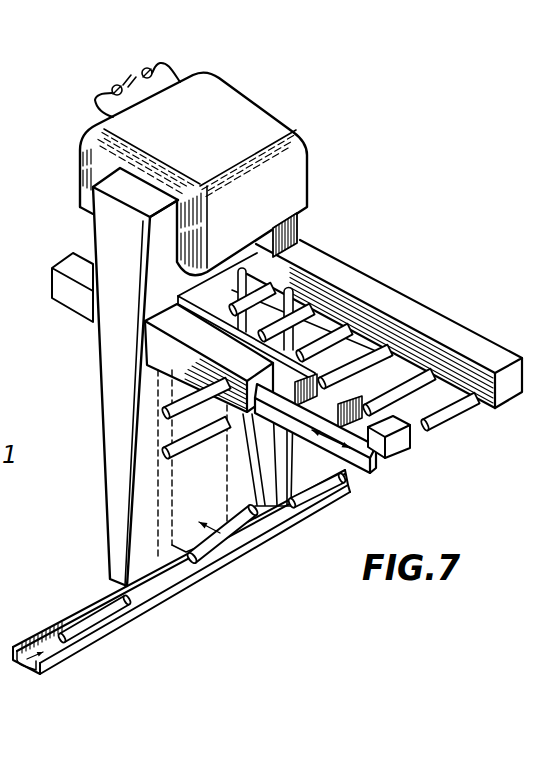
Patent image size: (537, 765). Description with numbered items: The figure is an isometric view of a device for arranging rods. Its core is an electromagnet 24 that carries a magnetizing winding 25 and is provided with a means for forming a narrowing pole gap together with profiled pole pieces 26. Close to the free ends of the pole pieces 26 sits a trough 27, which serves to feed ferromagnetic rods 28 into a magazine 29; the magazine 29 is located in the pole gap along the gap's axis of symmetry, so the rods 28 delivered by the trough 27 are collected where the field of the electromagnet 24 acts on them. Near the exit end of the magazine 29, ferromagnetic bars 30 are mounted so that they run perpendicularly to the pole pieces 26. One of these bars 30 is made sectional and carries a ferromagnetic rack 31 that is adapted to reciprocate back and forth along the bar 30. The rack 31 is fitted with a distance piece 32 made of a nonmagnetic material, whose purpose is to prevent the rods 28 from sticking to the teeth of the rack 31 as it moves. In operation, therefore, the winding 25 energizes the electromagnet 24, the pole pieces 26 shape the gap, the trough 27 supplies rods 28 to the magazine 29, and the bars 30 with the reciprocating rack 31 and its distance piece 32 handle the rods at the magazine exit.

The electromagnet 24 is at (274, 93).
The magnetizing winding 25 is at (300, 161).
The profiled pole pieces 26 is at (102, 347).
The trough 27 is at (237, 549).
The ferromagnetic rods 28 is at (157, 587).
The magazine 29 is at (250, 512).
The ferromagnetic bars 30 is at (394, 301).
The ferromagnetic rack 31 is at (300, 430).
The distance piece 32 is at (408, 447).